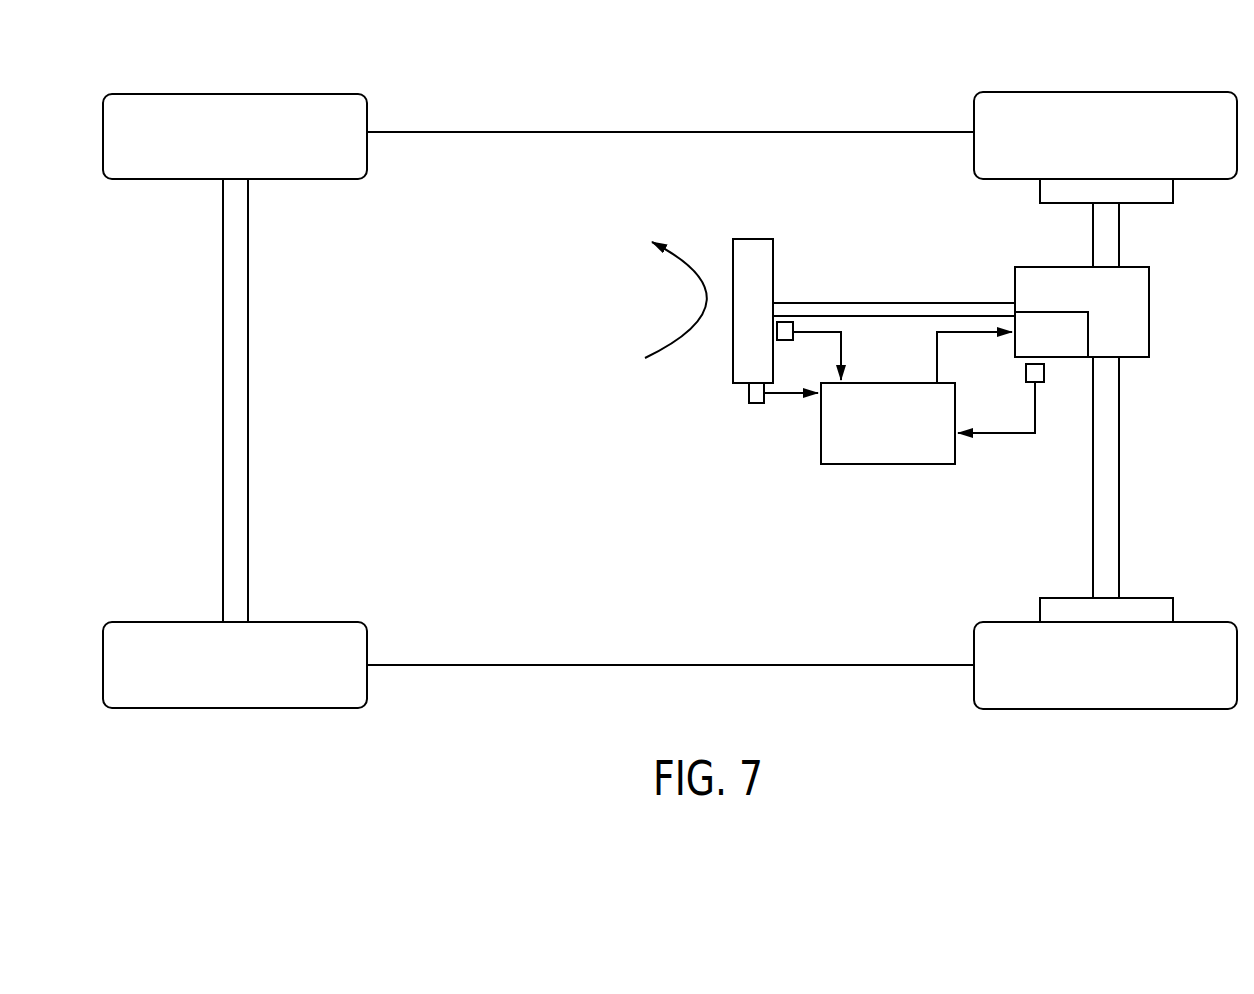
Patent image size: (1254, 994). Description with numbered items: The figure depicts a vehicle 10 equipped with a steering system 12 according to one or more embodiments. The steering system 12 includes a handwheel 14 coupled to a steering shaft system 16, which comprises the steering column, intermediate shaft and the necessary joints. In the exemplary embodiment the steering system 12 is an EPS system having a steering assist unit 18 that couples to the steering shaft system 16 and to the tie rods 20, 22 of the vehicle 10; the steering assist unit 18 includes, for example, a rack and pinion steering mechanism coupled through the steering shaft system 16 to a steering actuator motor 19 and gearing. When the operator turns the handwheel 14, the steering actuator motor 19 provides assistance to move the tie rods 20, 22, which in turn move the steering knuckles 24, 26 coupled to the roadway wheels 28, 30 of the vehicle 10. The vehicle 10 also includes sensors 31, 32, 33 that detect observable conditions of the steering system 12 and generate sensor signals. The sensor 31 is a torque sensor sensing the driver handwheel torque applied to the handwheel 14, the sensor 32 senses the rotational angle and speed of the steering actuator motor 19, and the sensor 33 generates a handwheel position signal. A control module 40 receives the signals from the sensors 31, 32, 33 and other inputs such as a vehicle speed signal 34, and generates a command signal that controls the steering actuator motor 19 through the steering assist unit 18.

The vehicle 10 is at (705, 92).
The steering system 12 is at (830, 280).
The handwheel 14 is at (758, 239).
The steering shaft system 16 is at (895, 303).
The steering assist unit 18 is at (1114, 317).
The steering actuator motor 19 is at (1088, 330).
The tie rod 20 is at (1120, 250).
The tie rod 22 is at (1120, 492).
The steering knuckle 24 is at (1058, 195).
The steering knuckle 26 is at (1150, 605).
The roadway wheel 28 is at (980, 108).
The roadway wheel 30 is at (1205, 630).
The torque sensor 31 is at (786, 322).
The motor angle and speed sensor 32 is at (1025, 370).
The handwheel position sensor 33 is at (757, 405).
The vehicle speed signal 34 is at (886, 472).
The control module 40 is at (888, 402).